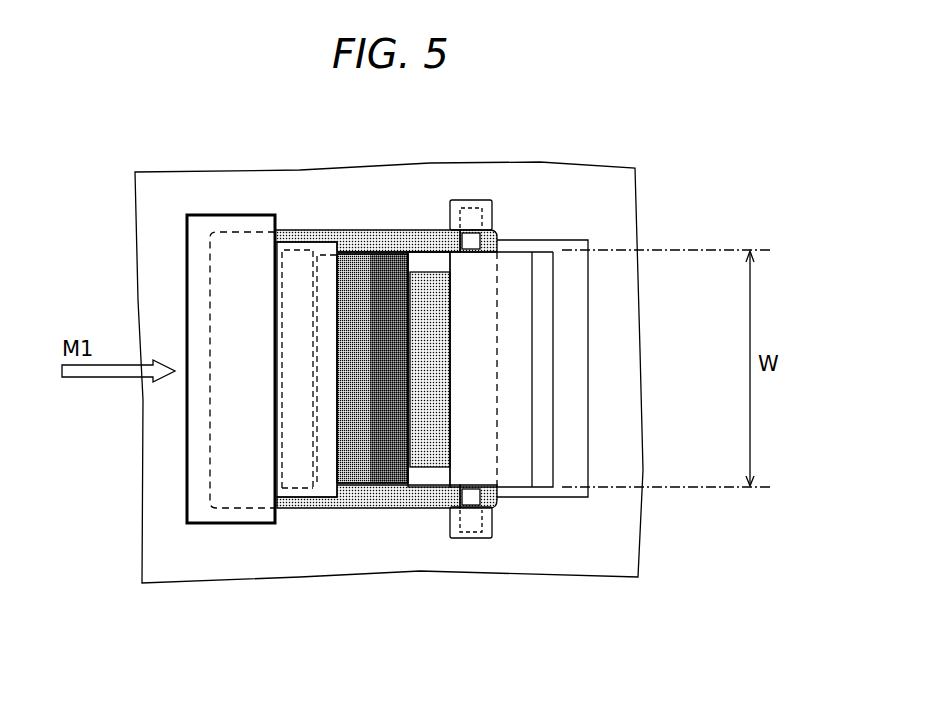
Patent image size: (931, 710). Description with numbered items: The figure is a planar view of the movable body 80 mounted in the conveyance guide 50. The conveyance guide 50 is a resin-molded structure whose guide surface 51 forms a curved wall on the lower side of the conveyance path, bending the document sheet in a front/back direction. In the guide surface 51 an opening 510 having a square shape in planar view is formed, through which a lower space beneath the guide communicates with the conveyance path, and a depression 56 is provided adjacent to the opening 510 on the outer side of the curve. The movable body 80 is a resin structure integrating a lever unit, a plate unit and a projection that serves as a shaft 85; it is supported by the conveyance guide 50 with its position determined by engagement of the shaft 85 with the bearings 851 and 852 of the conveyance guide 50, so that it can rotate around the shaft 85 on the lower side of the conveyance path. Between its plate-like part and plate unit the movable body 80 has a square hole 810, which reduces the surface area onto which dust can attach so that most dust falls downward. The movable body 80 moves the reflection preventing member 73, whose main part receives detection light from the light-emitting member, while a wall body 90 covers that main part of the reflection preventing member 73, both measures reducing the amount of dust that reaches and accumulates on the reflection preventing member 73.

The conveyance guide 50 is at (295, 167).
The guide surface 51 is at (188, 170).
The opening 510 is at (383, 230).
The wall body 90 is at (291, 507).
The reflection preventing member 73 is at (371, 465).
The hole 810 is at (447, 351).
The movable body 80 is at (430, 480).
The depression 56 is at (586, 389).
The bearing 851 is at (473, 200).
The bearing 852 is at (474, 538).
The shaft 85 is at (486, 242).